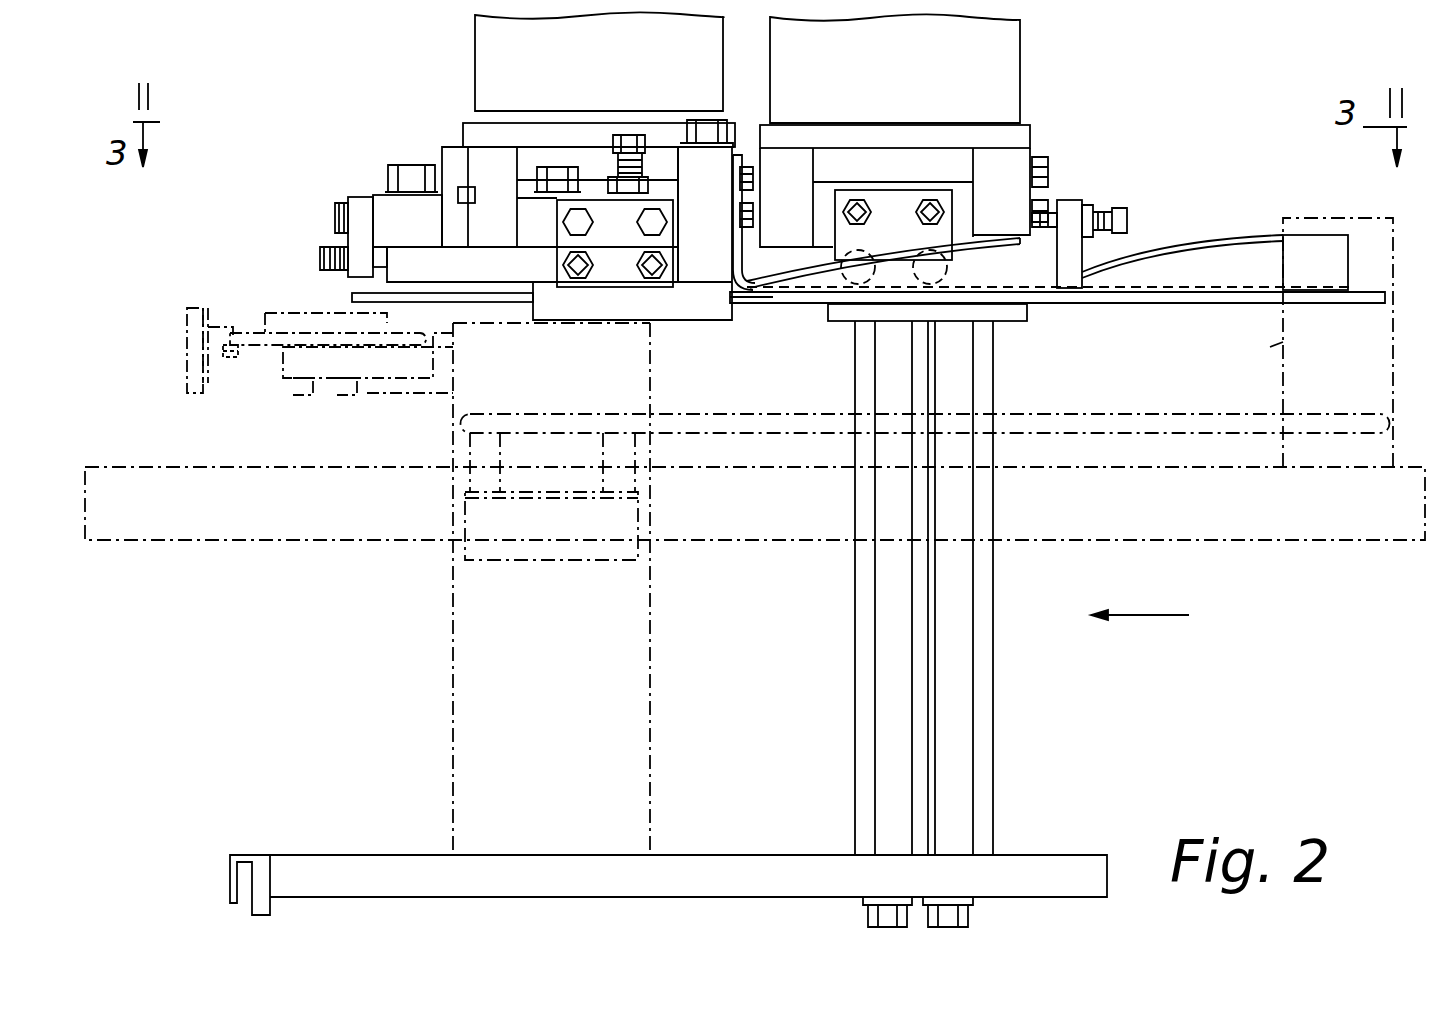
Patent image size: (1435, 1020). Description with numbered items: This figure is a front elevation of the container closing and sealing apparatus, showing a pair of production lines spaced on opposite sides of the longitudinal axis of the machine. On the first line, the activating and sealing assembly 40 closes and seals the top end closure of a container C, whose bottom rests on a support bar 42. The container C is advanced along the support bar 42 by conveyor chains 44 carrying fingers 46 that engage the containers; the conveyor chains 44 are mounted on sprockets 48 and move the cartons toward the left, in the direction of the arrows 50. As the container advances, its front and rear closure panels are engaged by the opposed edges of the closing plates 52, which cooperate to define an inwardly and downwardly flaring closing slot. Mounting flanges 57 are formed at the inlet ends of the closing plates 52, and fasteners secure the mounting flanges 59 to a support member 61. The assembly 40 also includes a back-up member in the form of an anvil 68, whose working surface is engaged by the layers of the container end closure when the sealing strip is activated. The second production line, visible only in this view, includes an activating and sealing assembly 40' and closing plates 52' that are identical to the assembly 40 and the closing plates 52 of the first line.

The activating and sealing assembly 40 is at (559, 61).
The activating and sealing assembly of the second production line 40' is at (958, 68).
The mounting flanges 57 is at (738, 158).
The mounting flanges 59 is at (754, 177).
The support member 61 is at (705, 240).
The anvil 68 is at (488, 267).
The closing plates 52 is at (1048, 303).
The closing plates of the second production line 52' is at (1182, 229).
The sprockets 48 is at (250, 330).
The fingers 46 is at (187, 360).
The conveyor chains 44 is at (230, 357).
The support bar 42 is at (1231, 524).
The arrows 50 is at (1142, 616).
The container C is at (1287, 341).